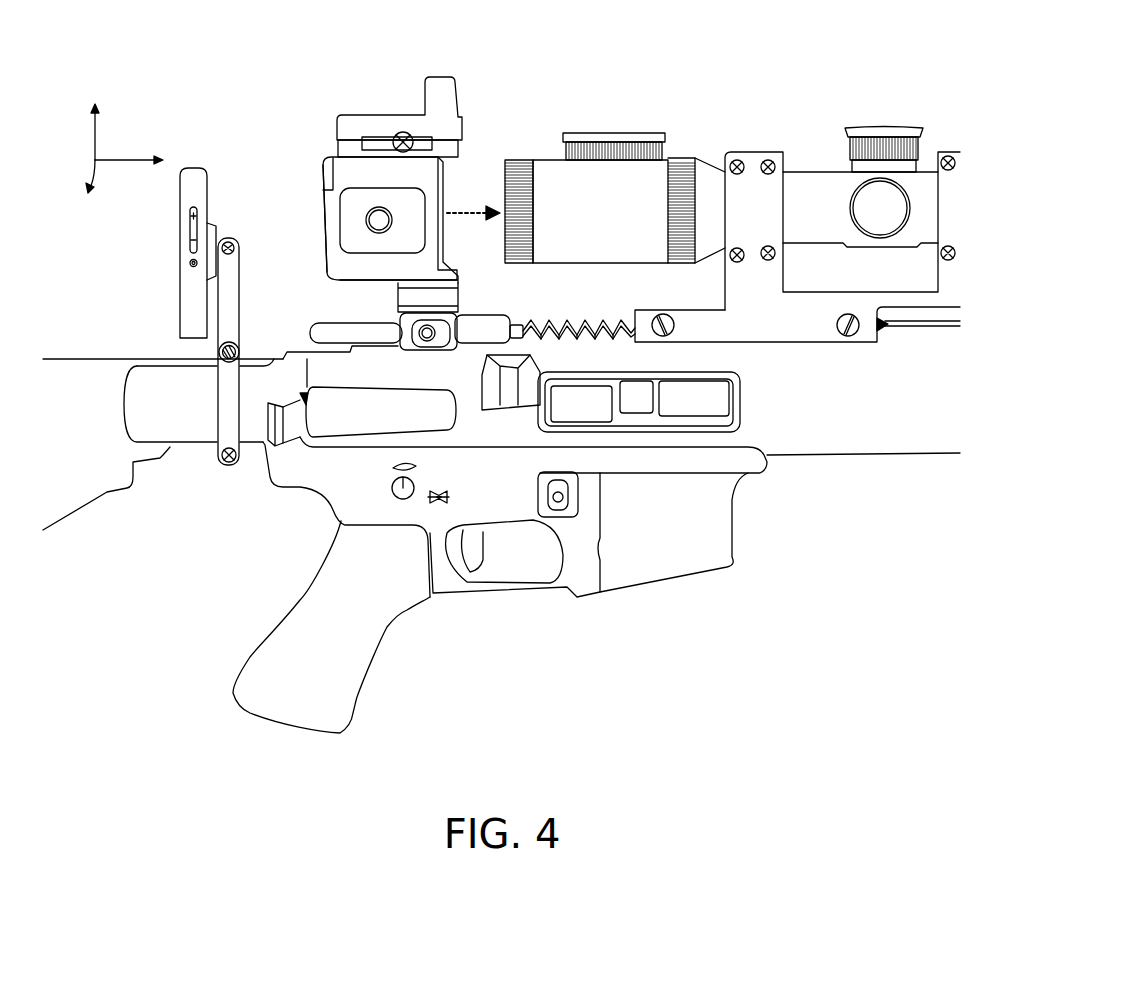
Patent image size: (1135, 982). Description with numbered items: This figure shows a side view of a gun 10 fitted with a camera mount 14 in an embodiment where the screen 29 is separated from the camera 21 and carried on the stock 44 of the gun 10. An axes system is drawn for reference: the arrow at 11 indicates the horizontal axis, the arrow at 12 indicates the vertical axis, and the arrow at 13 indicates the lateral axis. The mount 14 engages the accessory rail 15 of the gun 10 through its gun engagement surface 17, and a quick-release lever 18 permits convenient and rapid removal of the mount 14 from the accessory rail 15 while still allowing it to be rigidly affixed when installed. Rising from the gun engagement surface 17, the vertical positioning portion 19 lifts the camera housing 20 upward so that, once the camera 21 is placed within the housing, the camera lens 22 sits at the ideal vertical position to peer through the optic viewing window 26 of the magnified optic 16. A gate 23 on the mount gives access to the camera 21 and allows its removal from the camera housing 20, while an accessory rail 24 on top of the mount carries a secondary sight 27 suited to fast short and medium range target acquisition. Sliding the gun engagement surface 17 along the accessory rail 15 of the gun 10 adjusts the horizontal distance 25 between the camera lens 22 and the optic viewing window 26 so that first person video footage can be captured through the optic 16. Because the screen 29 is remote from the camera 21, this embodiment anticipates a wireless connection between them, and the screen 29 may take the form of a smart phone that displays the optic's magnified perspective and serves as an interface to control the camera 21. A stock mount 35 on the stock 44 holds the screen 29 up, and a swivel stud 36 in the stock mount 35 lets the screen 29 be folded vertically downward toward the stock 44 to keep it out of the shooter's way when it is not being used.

The gun 10 is at (330, 373).
The horizontal axis arrow 11 is at (139, 160).
The vertical axis arrow 12 is at (95, 122).
The lateral axis arrow 13 is at (84, 185).
The mount 14 is at (532, 190).
The accessory rail 15 is at (543, 320).
The optic 16 is at (707, 187).
The gun engagement surface 17 is at (406, 329).
The quick-release lever 18 is at (457, 327).
The vertical positioning portion 19 is at (458, 283).
The camera housing 20 is at (376, 268).
The camera 21 is at (355, 220).
The camera lens 22 is at (428, 267).
The gate 23 is at (325, 158).
The accessory rail 24 is at (335, 133).
The horizontal distance 25 is at (482, 206).
The optic viewing window 26 is at (585, 138).
The secondary sight 27 is at (348, 120).
The screen 29 is at (183, 282).
The stock mount 35 is at (227, 400).
The swivel stud 36 is at (235, 340).
The stock 44 is at (157, 373).